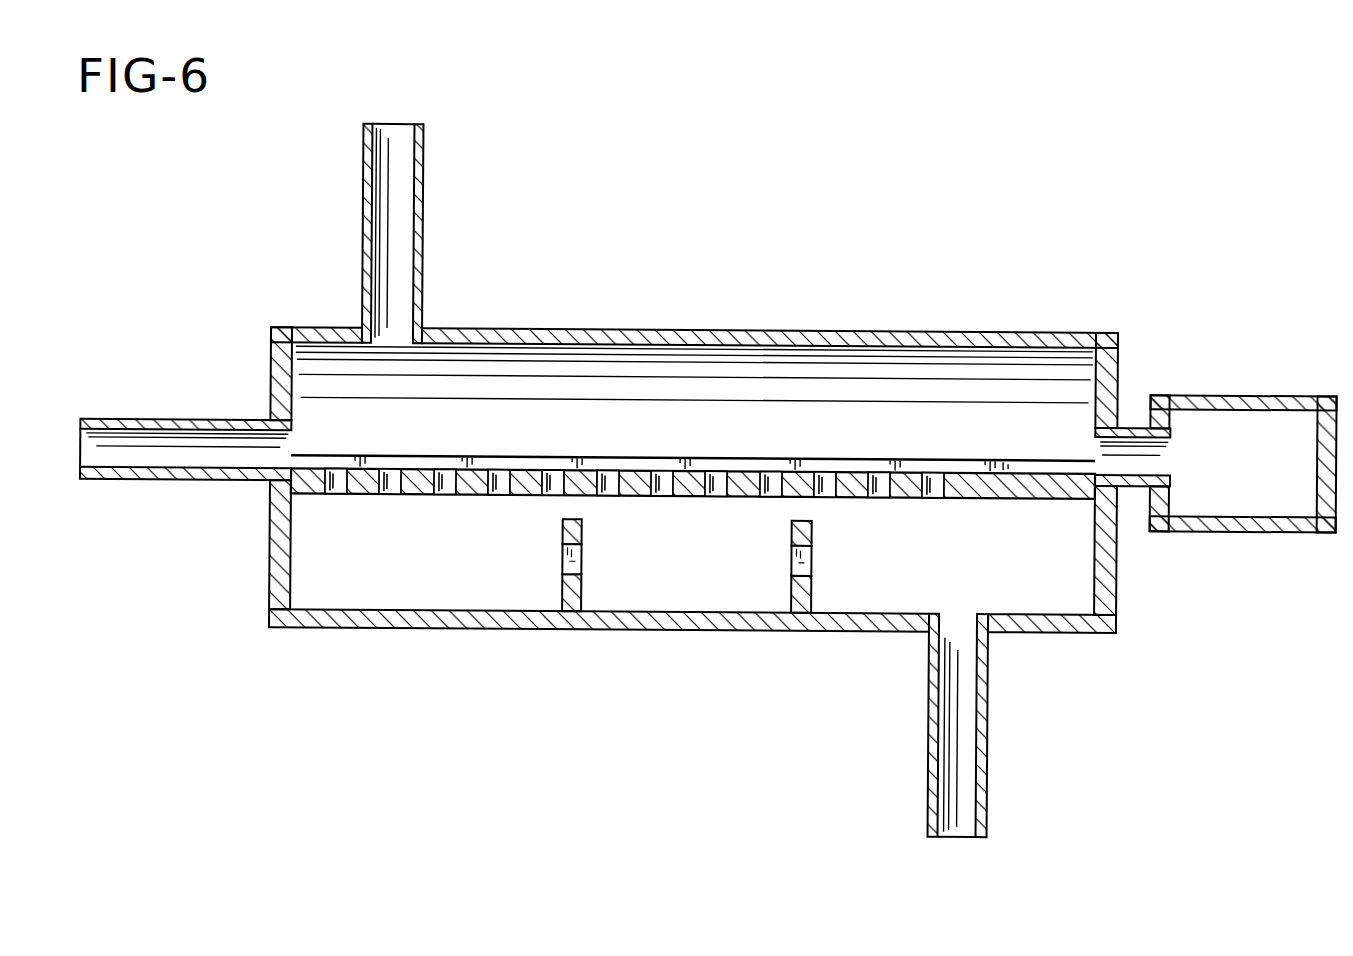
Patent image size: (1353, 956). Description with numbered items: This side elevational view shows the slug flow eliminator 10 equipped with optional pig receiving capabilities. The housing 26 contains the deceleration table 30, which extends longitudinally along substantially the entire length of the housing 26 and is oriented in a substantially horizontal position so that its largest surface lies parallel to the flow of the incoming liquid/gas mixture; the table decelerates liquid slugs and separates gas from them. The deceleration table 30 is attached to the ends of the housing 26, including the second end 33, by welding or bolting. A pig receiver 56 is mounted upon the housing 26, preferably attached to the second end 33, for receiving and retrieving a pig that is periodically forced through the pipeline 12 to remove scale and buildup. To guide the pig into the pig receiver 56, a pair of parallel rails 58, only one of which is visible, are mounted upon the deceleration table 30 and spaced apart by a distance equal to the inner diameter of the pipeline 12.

The slug flow eliminator 10 is at (762, 242).
The pipeline 12 is at (166, 423).
The housing 26 is at (878, 330).
The deceleration table 30 is at (998, 486).
The second end 33 is at (1107, 379).
The pig receiver 56 is at (1240, 391).
The rails 58 is at (847, 463).